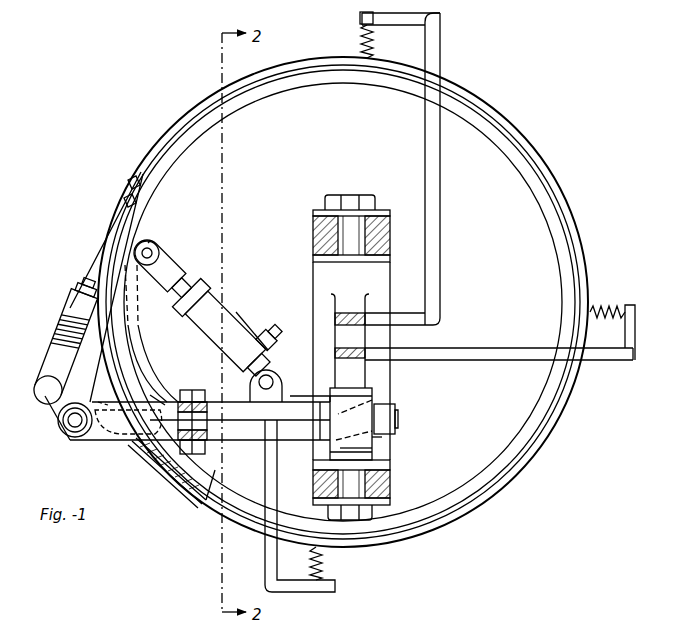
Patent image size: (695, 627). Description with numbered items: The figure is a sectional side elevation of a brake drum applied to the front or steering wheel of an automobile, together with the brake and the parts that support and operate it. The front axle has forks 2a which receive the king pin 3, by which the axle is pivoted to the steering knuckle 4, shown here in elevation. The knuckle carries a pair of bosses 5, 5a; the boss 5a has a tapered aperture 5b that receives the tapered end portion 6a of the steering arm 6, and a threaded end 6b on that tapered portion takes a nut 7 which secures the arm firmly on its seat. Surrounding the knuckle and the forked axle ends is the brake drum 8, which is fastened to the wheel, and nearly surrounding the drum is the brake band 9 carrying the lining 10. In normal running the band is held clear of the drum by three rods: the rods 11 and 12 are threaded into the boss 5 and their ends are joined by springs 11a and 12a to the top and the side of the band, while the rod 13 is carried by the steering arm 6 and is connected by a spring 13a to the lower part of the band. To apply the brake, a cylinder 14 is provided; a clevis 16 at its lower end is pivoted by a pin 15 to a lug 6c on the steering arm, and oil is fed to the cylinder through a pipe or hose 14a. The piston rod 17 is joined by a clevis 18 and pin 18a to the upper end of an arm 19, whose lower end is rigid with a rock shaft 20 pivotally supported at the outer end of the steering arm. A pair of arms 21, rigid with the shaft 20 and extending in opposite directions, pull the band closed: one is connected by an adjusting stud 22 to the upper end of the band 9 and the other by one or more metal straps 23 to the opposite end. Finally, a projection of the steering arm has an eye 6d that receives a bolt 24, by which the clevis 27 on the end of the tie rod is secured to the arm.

The forks 2a is at (313, 242).
The king pin 3 is at (337, 232).
The steering knuckle 4 is at (313, 286).
The boss 5 is at (355, 300).
The boss 5a is at (372, 450).
The tapered aperture 5b is at (352, 408).
The steering arm 6 is at (254, 442).
The tapered end portion 6a is at (304, 396).
The threaded end 6b is at (398, 422).
The lug 6c is at (266, 392).
The eye 6d is at (206, 480).
The nut 7 is at (382, 440).
The brake drum 8 is at (513, 157).
The brake band 9 is at (574, 218).
The lining 10 is at (584, 172).
The rod 11 is at (425, 137).
The spring 11a is at (360, 38).
The rod 12 is at (500, 347).
The spring 12a is at (622, 306).
The rod 13 is at (265, 546).
The spring 13a is at (326, 570).
The cylinder 14 is at (252, 319).
The pipe or hose 14a is at (272, 316).
The pin 15 is at (274, 386).
The clevis 16 is at (270, 362).
The piston rod 17 is at (186, 278).
The clevis 18 is at (160, 251).
The pin 18a is at (150, 241).
The arm 19 is at (132, 325).
The rock shaft 20 is at (75, 440).
The arms 21 is at (110, 402).
The adjusting stud 22 is at (102, 258).
The metal straps 23 is at (150, 466).
The bolt 24 is at (195, 412).
The clevis 27 is at (165, 387).